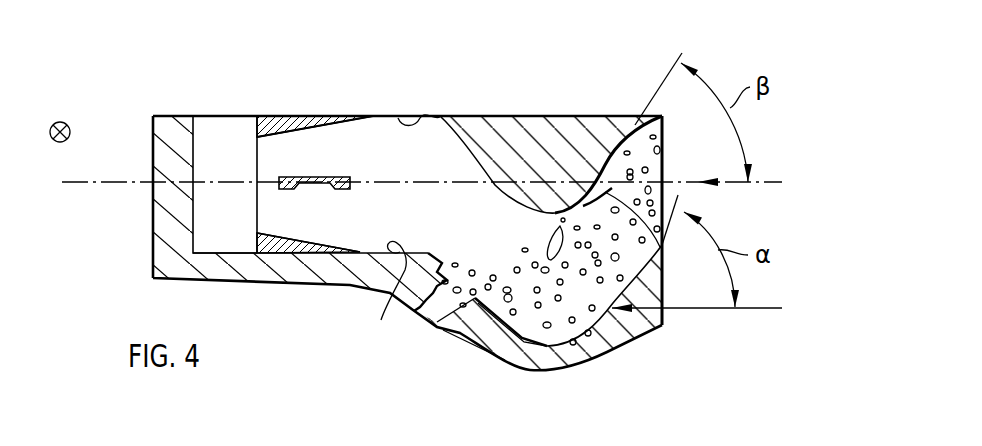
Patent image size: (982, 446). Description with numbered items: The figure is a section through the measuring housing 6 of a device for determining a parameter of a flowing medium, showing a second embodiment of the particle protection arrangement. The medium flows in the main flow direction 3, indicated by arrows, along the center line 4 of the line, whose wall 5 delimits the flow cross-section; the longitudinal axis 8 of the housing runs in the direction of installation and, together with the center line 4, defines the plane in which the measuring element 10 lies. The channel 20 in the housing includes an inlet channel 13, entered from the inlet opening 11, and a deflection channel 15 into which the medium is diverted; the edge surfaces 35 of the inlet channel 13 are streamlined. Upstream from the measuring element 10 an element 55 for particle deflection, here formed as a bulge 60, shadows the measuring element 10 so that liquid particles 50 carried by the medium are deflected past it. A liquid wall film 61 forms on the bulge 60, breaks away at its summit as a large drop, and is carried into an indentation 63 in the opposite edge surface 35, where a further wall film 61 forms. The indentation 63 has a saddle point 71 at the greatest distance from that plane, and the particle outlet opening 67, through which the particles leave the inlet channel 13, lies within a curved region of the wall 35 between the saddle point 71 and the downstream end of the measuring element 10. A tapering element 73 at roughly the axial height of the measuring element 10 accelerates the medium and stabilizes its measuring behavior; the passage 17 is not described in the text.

The main flow direction 3 is at (770, 183).
The center line 4 is at (118, 183).
The wall 5 is at (498, 125).
The measuring housing 6 is at (140, 240).
The longitudinal axis 8 is at (63, 122).
The measuring element 10 is at (340, 177).
The inlet opening 11 is at (657, 193).
The inlet channel 13 is at (473, 217).
The deflection channel 15 is at (222, 138).
The passage 17 is at (318, 150).
The channel 20 is at (333, 266).
The edge surface 35 is at (422, 116).
The liquid particles 50 is at (518, 268).
The element for particle deflection 55 is at (606, 137).
The bulge 60 is at (555, 173).
The liquid wall film 61 is at (510, 363).
The indentation 63 is at (525, 350).
The particle outlet opening 67 is at (438, 320).
The saddle point 71 is at (557, 363).
The tapering element 73 is at (275, 116).